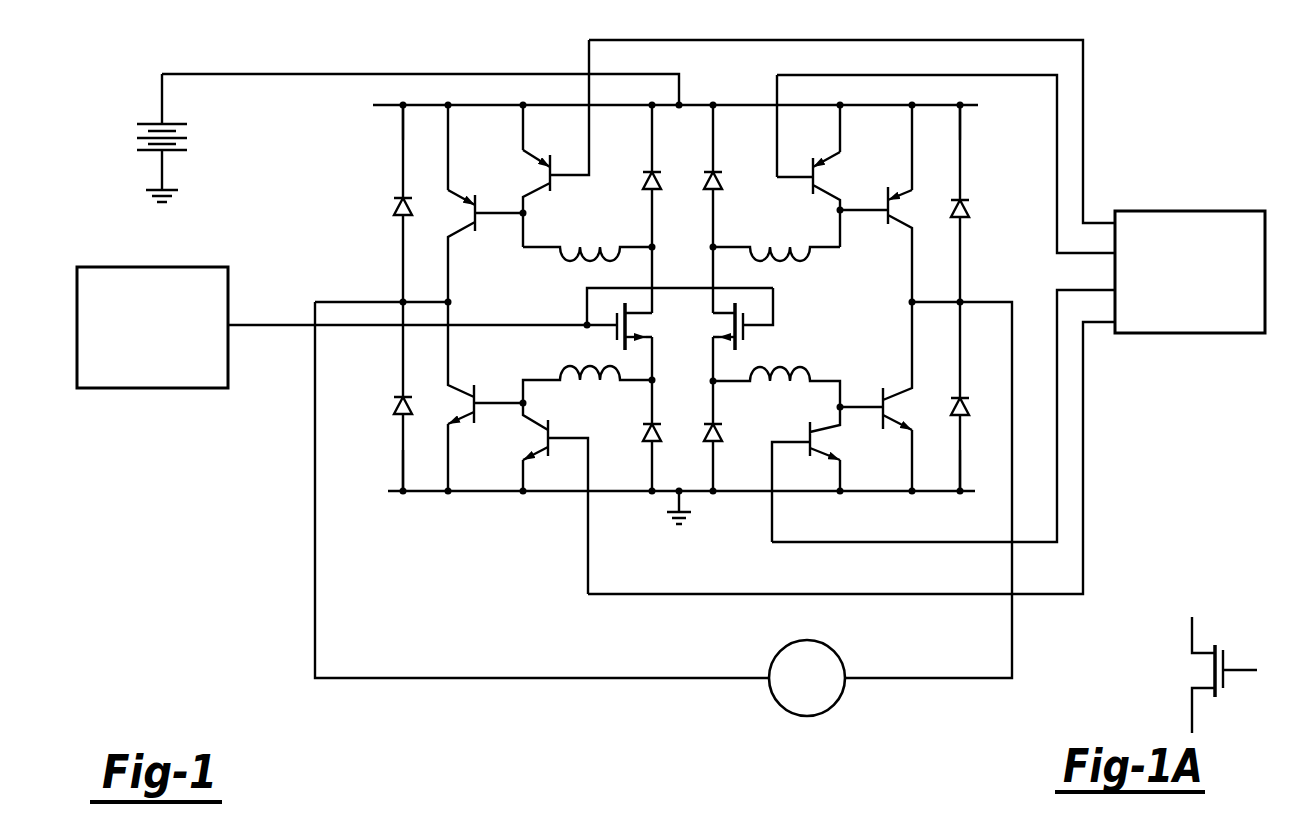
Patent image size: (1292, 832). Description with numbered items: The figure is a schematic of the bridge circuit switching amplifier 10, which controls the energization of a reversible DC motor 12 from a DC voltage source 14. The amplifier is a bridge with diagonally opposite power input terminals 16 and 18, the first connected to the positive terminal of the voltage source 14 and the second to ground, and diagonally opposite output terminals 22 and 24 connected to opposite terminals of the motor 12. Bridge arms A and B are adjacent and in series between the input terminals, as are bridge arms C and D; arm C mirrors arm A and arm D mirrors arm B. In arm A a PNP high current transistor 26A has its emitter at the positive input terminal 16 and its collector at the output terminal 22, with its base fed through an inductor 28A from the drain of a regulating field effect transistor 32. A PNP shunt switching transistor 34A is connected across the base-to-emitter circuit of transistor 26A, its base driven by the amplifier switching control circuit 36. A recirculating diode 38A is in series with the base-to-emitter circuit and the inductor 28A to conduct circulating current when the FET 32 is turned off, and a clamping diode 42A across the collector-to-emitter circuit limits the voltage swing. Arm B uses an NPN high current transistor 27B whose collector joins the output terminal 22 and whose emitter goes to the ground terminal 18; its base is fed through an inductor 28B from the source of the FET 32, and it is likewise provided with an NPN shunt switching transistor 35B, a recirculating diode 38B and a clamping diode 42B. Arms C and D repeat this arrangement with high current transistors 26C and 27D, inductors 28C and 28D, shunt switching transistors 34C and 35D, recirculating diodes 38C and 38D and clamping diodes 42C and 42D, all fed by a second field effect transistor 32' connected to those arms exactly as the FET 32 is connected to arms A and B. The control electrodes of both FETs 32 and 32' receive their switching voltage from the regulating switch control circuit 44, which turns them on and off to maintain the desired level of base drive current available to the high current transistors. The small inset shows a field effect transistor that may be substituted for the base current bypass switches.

The switching amplifier 10 is at (950, 36).
The reversible DC motor 12 is at (843, 662).
The DC voltage source 14 is at (190, 141).
The power input terminal 16 is at (682, 104).
The power input terminal 18 is at (672, 505).
The output terminal 22 is at (400, 300).
The output terminal 24 is at (965, 298).
The high current transistor 26A is at (493, 183).
The high current transistor 26C is at (885, 200).
The high current transistor 27B is at (493, 371).
The high current transistor 27D is at (890, 381).
The inductor 28A is at (615, 225).
The inductor 28B is at (592, 355).
The inductor 28C is at (795, 225).
The inductor 28D is at (820, 355).
The field effect transistor 32 is at (500, 313).
The field effect transistor 32' is at (768, 314).
The shunt switching transistor 34A is at (565, 148).
The shunt switching transistor 34C is at (802, 167).
The shunt switching transistor 35B is at (538, 436).
The shunt switching transistor 35D is at (808, 437).
The amplifier switching control circuit 36 is at (1218, 180).
The recirculating diode 38A is at (646, 180).
The recirculating diode 38B is at (646, 432).
The recirculating diode 38C is at (723, 182).
The recirculating diode 38D is at (705, 426).
The clamping diode 42A is at (394, 203).
The clamping diode 42B is at (397, 404).
The clamping diode 42C is at (965, 200).
The clamping diode 42D is at (965, 405).
The regulating switch control circuit 44 is at (190, 243).
The bridge arm A is at (355, 147).
The bridge arm B is at (386, 446).
The bridge arm C is at (963, 141).
The bridge arm D is at (967, 469).